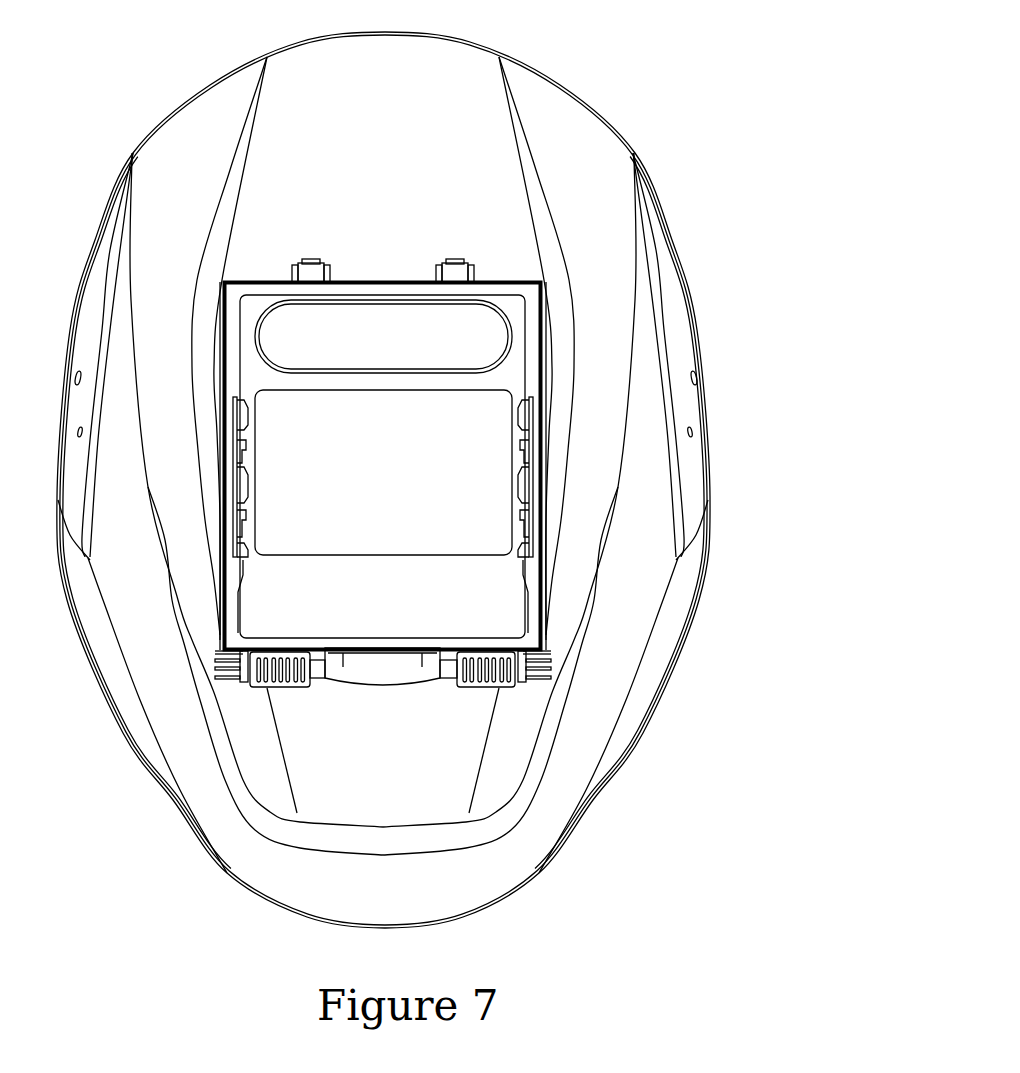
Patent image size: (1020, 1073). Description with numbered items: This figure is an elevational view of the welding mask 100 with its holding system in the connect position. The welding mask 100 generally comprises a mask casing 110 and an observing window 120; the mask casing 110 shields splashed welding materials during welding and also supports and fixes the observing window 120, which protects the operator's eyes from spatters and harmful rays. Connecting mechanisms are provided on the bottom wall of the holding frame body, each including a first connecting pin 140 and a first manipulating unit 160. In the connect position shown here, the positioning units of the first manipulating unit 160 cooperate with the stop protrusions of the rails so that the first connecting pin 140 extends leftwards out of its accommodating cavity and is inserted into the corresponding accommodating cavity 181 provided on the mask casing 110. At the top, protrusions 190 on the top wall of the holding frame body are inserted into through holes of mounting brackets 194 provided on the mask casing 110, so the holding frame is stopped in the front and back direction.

The welding mask 100 is at (632, 62).
The mask casing 110 is at (618, 160).
The observing window 120 is at (533, 607).
The first connecting pin 140 is at (218, 670).
The first manipulating unit 160 is at (298, 688).
The accommodating cavity 181 is at (237, 681).
The protrusions 190 is at (312, 258).
The mounting brackets 194 is at (337, 265).